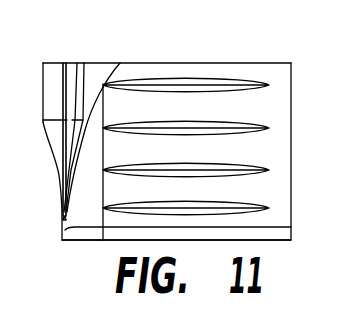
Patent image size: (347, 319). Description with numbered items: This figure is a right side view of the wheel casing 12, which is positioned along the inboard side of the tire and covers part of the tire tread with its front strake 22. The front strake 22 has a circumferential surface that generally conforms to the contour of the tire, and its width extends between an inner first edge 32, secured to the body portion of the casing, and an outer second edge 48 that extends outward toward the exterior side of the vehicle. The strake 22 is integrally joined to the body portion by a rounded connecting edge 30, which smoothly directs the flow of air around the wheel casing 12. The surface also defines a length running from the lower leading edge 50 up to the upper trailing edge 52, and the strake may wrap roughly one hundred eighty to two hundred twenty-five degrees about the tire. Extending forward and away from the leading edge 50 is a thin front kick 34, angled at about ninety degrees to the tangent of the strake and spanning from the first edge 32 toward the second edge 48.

The wheel casing 12 is at (0, 22).
The front strake 22 is at (255, 152).
The rounded connecting edge 30 is at (72, 219).
The first edge 32 is at (104, 109).
The front kick 34 is at (271, 233).
The second edge 48 is at (292, 72).
The leading edge 50 is at (277, 226).
The trailing edge 52 is at (203, 63).